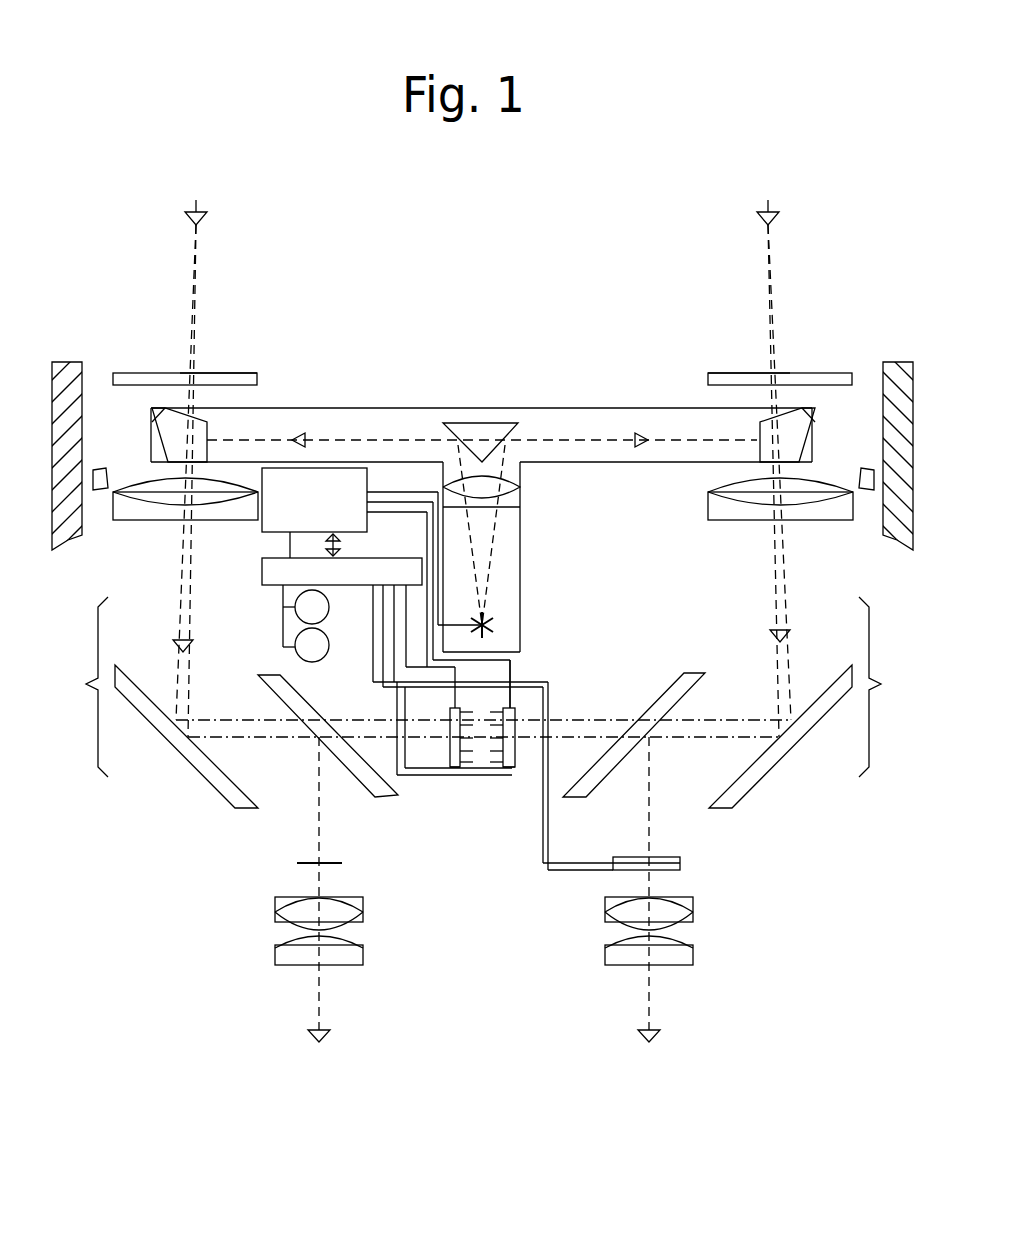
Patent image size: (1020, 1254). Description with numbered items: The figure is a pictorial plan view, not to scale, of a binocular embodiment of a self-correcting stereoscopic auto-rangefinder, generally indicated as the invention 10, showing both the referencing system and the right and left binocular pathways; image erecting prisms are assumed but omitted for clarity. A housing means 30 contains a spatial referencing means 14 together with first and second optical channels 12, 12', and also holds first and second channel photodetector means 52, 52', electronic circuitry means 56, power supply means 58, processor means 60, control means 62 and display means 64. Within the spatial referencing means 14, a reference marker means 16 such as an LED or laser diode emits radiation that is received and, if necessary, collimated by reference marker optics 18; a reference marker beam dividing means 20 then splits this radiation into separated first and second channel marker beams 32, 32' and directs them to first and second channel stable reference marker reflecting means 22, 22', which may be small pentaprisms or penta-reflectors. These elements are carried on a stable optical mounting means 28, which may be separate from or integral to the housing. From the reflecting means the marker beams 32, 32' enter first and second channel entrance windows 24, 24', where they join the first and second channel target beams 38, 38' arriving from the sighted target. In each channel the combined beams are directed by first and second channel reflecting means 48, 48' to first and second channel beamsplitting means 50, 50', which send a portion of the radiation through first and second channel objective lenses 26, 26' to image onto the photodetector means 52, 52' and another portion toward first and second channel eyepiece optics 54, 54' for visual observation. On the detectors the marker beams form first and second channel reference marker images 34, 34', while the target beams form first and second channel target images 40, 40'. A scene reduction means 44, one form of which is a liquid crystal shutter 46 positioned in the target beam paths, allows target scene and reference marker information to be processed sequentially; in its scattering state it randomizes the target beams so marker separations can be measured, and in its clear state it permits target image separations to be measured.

The invention 10 is at (497, 373).
The first optical channel 12 is at (80, 687).
The second optical channel 12' is at (893, 687).
The spatial referencing means 14 is at (400, 407).
The reference marker means 16 is at (482, 625).
The reference marker optics 18 is at (490, 488).
The reference marker beam dividing means 20 is at (484, 437).
The first channel stable reference marker reflecting means 22 is at (152, 435).
The second channel stable reference marker reflecting means 22' is at (818, 435).
The first channel entrance window 24 is at (104, 518).
The second channel entrance window 24' is at (861, 517).
The first channel objective lens 26 is at (185, 522).
The second channel objective lens 26' is at (751, 524).
The stable optical mounting means 28 is at (645, 410).
The housing means 30 is at (72, 362).
The first channel marker beam 32 is at (205, 621).
The second channel marker beam 32' is at (756, 617).
The first channel reference marker image 34 is at (444, 737).
The second channel reference marker image 34' is at (540, 737).
The first channel target beam 38 is at (483, 447).
The second channel target beam 38' is at (768, 447).
The first channel target image 40 is at (454, 728).
The second channel target image 40' is at (558, 691).
The scene reduction means 44 is at (165, 373).
The liquid crystal shutter 46 is at (222, 375).
The first channel reflecting means 48 is at (186, 736).
The second channel reflecting means 48' is at (780, 736).
The first channel beamsplitting means 50 is at (303, 732).
The second channel beamsplitting means 50' is at (661, 729).
The first channel photodetector means 52 is at (442, 790).
The second channel photodetector means 52' is at (509, 790).
The first channel eyepiece optics 54 is at (363, 889).
The second channel eyepiece optics 54' is at (599, 889).
The electronic circuitry means 56 is at (392, 695).
The power supply means 58 is at (262, 525).
The processor means 60 is at (262, 568).
The control means 62 is at (329, 613).
The display means 64 is at (682, 863).